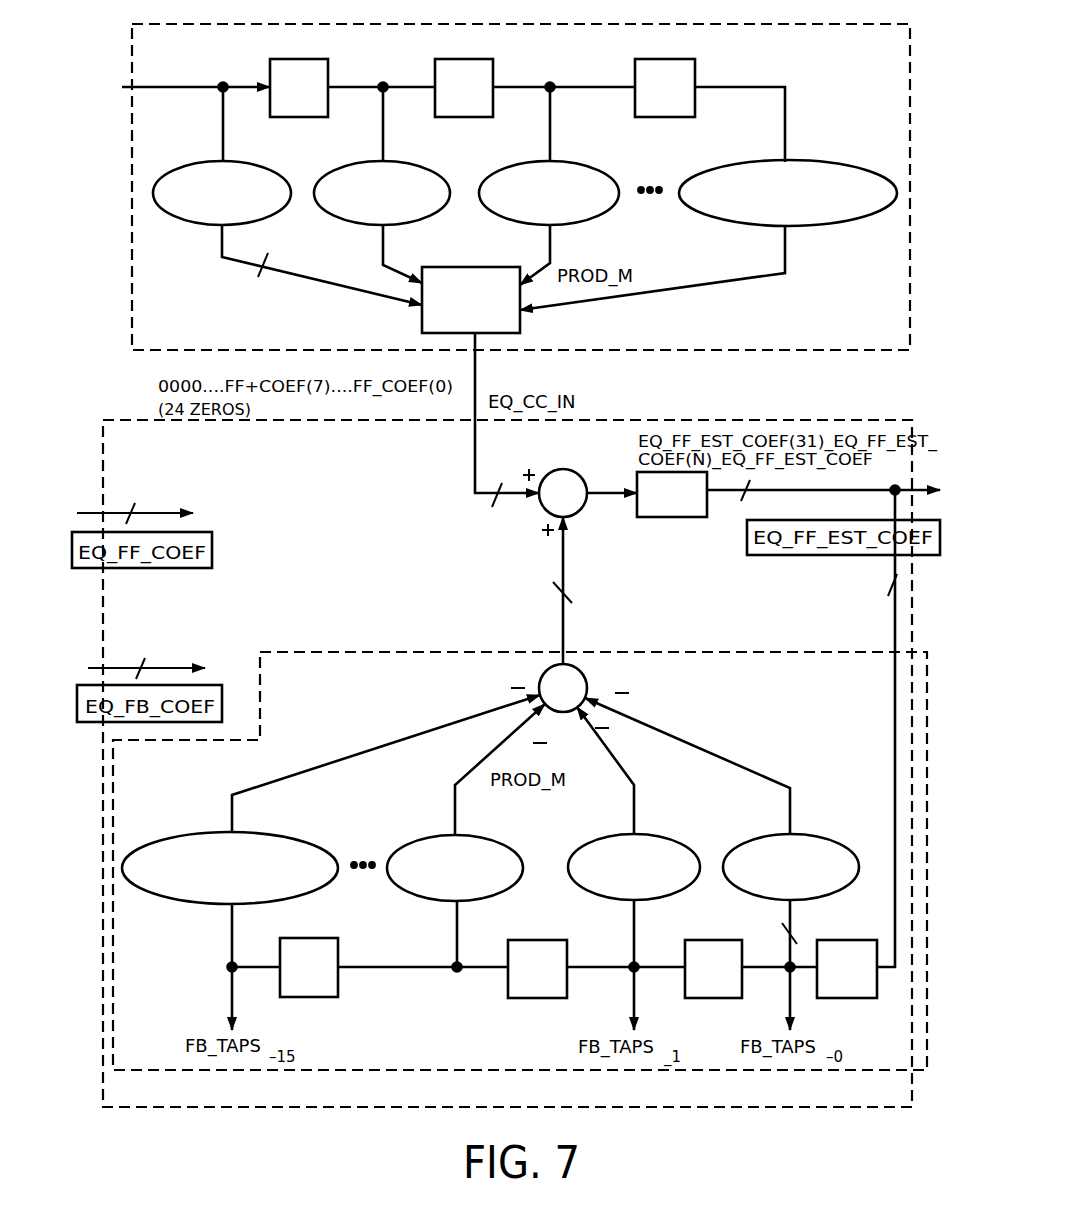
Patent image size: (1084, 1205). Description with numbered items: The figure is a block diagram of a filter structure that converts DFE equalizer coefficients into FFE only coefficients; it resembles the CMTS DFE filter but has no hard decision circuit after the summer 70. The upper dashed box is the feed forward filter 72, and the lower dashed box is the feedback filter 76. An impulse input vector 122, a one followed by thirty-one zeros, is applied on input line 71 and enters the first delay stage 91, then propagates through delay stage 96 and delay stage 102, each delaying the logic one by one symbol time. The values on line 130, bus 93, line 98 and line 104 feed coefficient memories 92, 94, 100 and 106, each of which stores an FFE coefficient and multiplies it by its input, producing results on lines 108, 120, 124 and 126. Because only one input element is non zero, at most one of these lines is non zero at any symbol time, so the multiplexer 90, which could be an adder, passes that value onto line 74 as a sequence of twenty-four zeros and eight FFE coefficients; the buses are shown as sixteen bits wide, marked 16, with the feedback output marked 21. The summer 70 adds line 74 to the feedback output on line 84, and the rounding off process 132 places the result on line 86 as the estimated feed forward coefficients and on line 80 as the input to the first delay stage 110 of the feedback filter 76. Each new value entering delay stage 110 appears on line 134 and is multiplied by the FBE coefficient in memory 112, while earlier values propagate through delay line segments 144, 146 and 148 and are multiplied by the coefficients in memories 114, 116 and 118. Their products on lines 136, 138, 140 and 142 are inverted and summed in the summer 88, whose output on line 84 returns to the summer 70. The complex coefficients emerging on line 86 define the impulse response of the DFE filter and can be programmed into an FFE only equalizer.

The input line 71 is at (163, 86).
The feed forward filter 72 is at (760, 24).
The input vector 122 is at (202, 120).
The first delay stage 91 is at (310, 58).
The delay stage 96 is at (473, 58).
The delay stage 102 is at (658, 58).
The line 130 is at (228, 118).
The bus 93 is at (388, 115).
The line 98 is at (555, 108).
The line 104 is at (790, 104).
The coefficient memory 92 is at (246, 162).
The coefficient memory 94 is at (403, 162).
The coefficient memory 100 is at (566, 162).
The coefficient memory 106 is at (803, 160).
The line 108 is at (288, 280).
The bus 120 is at (388, 236).
The line 124 is at (555, 236).
The line 126 is at (790, 246).
The multiplexer 90 is at (522, 322).
The 16-bit bus width 16 is at (502, 592).
The line 74 is at (475, 463).
The summer 70 is at (578, 470).
The rounding off process 132 is at (680, 518).
The line 86 is at (786, 488).
The line 84 is at (565, 622).
The 21-bit bus width 21 is at (575, 588).
The summer 88 is at (587, 672).
The feedback filter 76 is at (936, 660).
The line 80 is at (880, 712).
The line 142 is at (408, 738).
The line 140 is at (472, 768).
The line 138 is at (626, 768).
The line 136 is at (683, 734).
The coefficient memory 118 is at (242, 832).
The coefficient memory 116 is at (472, 832).
The coefficient memory 114 is at (655, 832).
The coefficient memory 112 is at (818, 832).
The line 134 is at (788, 906).
The delay line segment 148 is at (316, 999).
The delay line segment 146 is at (532, 1000).
The delay line segment 144 is at (708, 1000).
The first delay stage 110 is at (850, 1000).